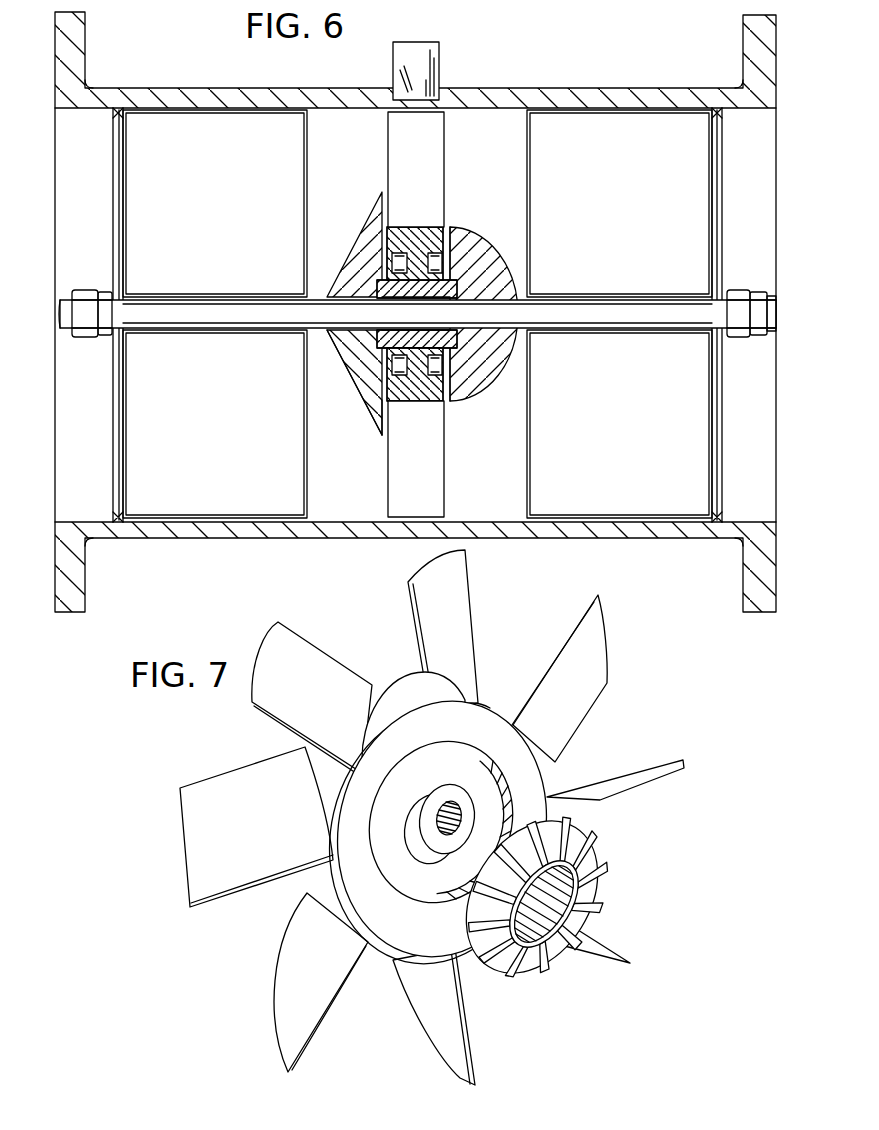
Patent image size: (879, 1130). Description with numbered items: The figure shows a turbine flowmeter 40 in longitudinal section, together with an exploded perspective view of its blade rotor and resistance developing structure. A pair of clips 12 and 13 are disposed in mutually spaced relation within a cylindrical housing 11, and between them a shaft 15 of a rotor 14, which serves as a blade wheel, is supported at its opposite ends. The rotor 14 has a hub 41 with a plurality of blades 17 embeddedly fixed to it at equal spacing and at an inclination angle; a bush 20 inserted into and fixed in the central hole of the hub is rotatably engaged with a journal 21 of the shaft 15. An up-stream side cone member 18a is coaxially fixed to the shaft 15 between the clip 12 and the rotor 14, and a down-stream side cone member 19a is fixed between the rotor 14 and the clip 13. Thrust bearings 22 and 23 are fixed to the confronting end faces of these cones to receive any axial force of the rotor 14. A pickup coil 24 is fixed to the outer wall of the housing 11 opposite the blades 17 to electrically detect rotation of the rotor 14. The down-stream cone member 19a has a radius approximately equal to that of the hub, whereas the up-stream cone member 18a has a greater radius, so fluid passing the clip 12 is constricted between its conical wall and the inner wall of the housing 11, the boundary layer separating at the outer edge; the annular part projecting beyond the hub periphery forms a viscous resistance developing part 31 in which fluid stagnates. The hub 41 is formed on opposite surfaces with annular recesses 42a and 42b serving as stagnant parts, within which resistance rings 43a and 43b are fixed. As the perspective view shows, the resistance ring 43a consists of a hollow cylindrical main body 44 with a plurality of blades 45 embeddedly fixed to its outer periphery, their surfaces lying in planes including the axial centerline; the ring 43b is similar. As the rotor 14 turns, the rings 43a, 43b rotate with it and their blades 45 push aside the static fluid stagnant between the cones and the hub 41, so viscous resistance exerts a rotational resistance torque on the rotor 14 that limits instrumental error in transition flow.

In FIG. 6, the turbine flowmeter 40 is at (200, 60).
In FIG. 6, the cylindrical housing 11 is at (592, 88).
In FIG. 6, the pickup coil 24 is at (442, 65).
In FIG. 6, the clip 12 is at (118, 253).
In FIG. 6, the clip 13 is at (718, 255).
In FIG. 6, the shaft 15 is at (160, 300).
In FIG. 6, the blades 17 is at (437, 140).
In FIG. 7, the blades 17 is at (255, 773).
In FIG. 6, the rotor 14 is at (452, 216).
In FIG. 7, the rotor 14 is at (597, 718).
In FIG. 6, the bush 20 is at (411, 253).
In FIG. 7, the bush 20 is at (430, 777).
In FIG. 6, the annular recess 42a is at (385, 258).
In FIG. 7, the annular recess 42a is at (476, 760).
In FIG. 6, the annular recess 42b is at (444, 258).
In FIG. 6, the resistance ring 43a is at (393, 268).
In FIG. 7, the resistance ring 43a is at (553, 897).
In FIG. 6, the resistance ring 43b is at (440, 268).
In FIG. 6, the thrust bearing 22 is at (365, 345).
In FIG. 6, the thrust bearing 23 is at (545, 370).
In FIG. 6, the up-stream side cone member 18a is at (363, 395).
In FIG. 6, the down-stream side cone member 19a is at (486, 385).
In FIG. 6, the hub 41 is at (405, 403).
In FIG. 7, the hub 41 is at (533, 760).
In FIG. 6, the journal 21 is at (415, 401).
In FIG. 6, the viscous resistance developing part 31 is at (372, 431).
In FIG. 7, the hollow cylindrical main body 44 is at (552, 920).
In FIG. 7, the blades 45 is at (605, 882).